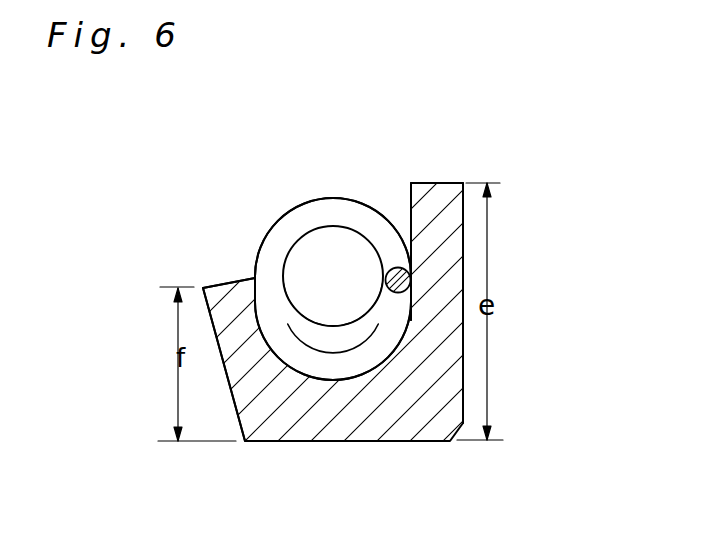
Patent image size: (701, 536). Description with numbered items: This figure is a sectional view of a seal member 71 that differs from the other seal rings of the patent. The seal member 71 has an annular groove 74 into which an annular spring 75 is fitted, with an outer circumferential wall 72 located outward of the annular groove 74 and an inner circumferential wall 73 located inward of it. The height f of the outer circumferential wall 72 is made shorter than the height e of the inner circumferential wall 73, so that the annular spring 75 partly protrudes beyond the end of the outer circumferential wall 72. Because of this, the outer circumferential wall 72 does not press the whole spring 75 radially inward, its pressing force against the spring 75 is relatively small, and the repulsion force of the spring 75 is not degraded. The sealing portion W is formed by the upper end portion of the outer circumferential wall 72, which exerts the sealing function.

The seal member 71 is at (464, 348).
The outer circumferential wall 72 is at (238, 305).
The inner circumferential wall 73 is at (438, 206).
The annular groove 74 is at (349, 375).
The annular spring 75 is at (298, 206).
The sealing portion W is at (205, 288).